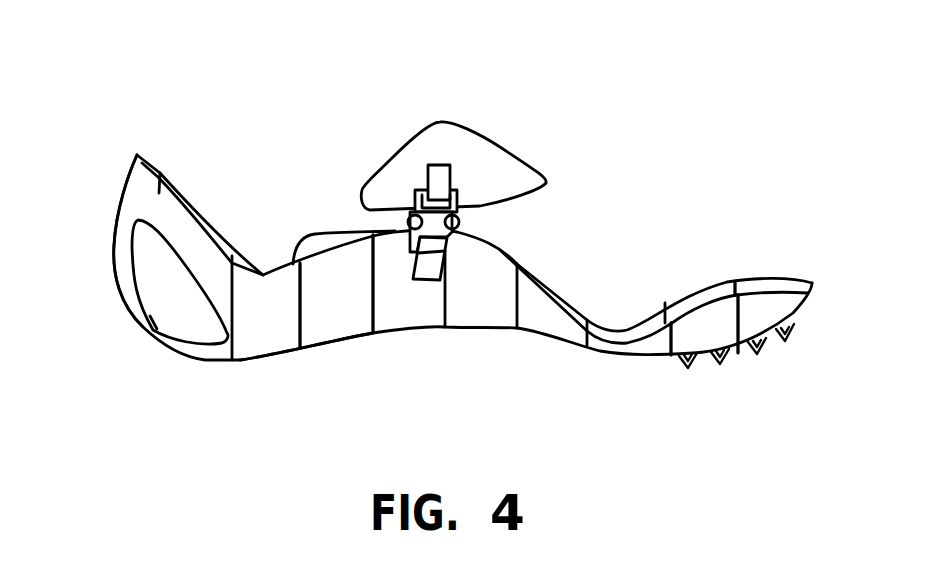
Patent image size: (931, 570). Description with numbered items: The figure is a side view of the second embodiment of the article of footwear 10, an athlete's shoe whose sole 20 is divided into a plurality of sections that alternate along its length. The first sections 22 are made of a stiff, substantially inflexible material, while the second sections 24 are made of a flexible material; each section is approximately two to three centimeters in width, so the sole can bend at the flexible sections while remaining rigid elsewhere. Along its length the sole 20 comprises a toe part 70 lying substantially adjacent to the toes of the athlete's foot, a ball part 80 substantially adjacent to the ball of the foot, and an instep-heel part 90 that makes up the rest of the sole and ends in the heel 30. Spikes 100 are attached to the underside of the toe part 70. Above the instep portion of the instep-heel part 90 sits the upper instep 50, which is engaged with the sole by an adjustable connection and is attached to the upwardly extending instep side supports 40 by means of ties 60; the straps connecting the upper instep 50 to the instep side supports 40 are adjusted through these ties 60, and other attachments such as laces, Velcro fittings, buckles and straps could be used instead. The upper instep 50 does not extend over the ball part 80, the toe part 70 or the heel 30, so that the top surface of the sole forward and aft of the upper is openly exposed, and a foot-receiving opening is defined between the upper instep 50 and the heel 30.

The article of footwear 10 is at (670, 137).
The sole 20 is at (115, 317).
The first sections 22 is at (153, 209).
The second sections 24 is at (207, 267).
The heel 30 is at (115, 178).
The instep side supports 40 is at (335, 288).
The upper instep 50 is at (472, 158).
The ties 60 is at (433, 222).
The toe part 70 is at (757, 320).
The ball part 80 is at (660, 348).
The instep-heel part 90 is at (282, 330).
The spikes 100 is at (720, 350).